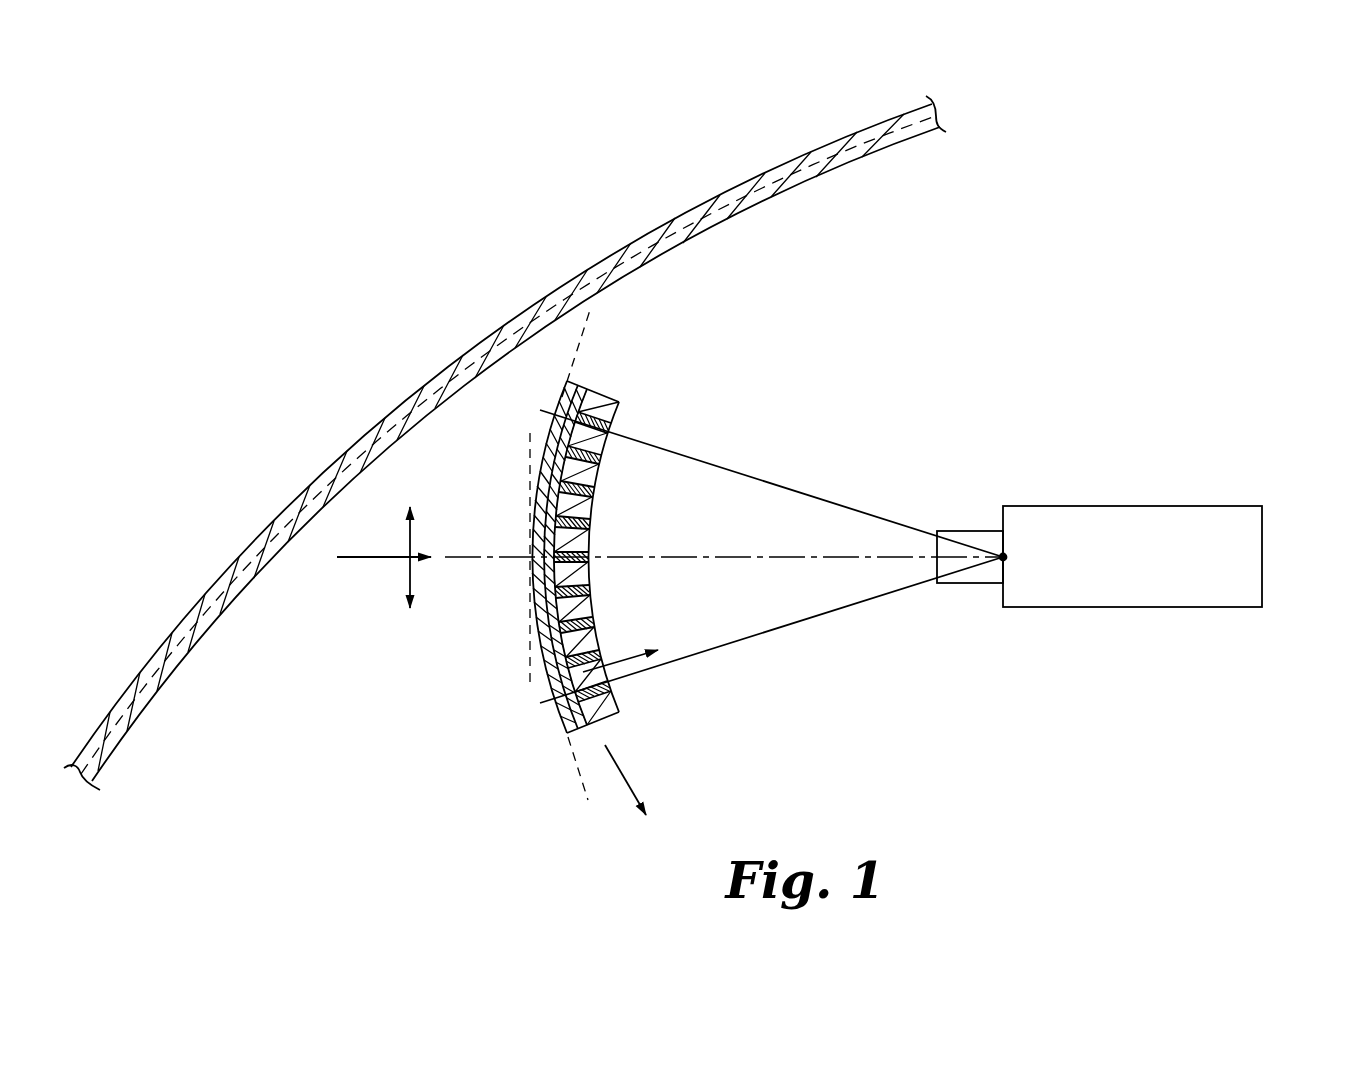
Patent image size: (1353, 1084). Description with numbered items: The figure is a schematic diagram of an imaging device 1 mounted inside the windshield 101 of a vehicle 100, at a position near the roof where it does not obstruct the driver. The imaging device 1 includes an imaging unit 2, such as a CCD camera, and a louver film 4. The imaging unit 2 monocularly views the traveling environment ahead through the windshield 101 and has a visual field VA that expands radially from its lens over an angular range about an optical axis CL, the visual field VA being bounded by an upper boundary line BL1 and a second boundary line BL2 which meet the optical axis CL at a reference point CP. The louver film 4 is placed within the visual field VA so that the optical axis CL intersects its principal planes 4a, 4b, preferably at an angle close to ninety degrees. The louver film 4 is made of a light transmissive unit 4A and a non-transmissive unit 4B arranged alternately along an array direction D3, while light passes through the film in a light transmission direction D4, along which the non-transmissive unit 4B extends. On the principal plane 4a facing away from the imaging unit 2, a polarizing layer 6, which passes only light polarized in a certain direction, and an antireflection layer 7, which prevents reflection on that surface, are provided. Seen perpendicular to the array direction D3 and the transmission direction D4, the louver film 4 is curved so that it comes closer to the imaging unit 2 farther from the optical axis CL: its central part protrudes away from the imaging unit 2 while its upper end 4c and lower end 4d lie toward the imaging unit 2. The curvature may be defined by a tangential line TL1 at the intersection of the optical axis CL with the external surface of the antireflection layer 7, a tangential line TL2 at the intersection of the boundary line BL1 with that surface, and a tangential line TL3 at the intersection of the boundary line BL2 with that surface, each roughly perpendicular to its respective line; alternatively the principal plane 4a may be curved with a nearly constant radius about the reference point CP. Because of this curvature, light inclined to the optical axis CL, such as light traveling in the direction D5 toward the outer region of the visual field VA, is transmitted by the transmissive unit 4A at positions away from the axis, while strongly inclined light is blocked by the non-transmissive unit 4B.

The imaging device 1 is at (853, 583).
The imaging unit 2 is at (1200, 505).
The louver film 4 is at (579, 583).
The light transmissive unit 4A is at (612, 404).
The non-transmissive unit 4B is at (597, 458).
The principal plane 4a is at (557, 605).
The principal plane 4b is at (593, 603).
The first end of lens 4c is at (597, 397).
The lower end 4d is at (606, 718).
The polarizing layer 6 is at (592, 731).
The antireflection layer 7 is at (580, 738).
The vehicle 100 is at (505, 443).
The windshield 101 is at (356, 440).
The reference point CP is at (1004, 557).
The optical axis CL is at (481, 553).
The upper boundary line BL1 is at (705, 462).
The boundary line BL2 is at (762, 636).
The visual field VA is at (827, 496).
The tangential line TL1 is at (530, 652).
The tangential line TL2 is at (578, 345).
The tangential line TL3 is at (580, 787).
The array direction D3 is at (410, 583).
The light transmission direction D4 is at (375, 557).
The direction D5 is at (632, 652).